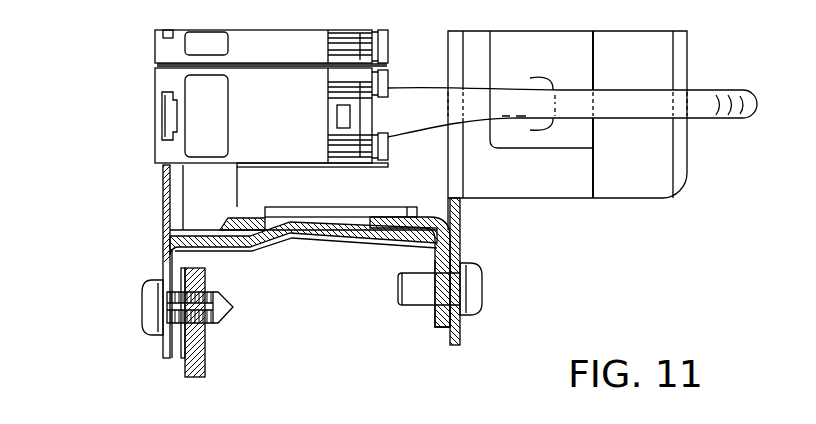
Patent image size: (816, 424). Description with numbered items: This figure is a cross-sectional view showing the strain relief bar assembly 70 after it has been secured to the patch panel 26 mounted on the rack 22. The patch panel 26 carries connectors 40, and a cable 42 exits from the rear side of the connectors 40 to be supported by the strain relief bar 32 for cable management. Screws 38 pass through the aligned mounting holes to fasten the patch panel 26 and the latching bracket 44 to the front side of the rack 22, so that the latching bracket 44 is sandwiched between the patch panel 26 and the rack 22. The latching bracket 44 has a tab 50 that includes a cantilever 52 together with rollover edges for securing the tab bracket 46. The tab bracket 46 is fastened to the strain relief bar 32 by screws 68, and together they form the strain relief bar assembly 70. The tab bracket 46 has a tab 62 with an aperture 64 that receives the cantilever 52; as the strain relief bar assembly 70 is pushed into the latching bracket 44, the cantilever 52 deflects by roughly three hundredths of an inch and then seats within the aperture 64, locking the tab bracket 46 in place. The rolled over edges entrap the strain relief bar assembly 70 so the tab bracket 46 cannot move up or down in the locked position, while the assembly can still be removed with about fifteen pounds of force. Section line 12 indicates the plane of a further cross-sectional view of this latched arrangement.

The section line 12 is at (148, 263).
The rack 22 is at (205, 353).
The patch panel 26 is at (160, 178).
The strain relief bar 32 is at (462, 225).
The screws 38 is at (142, 315).
The connectors 40 is at (155, 83).
The cable 42 is at (702, 97).
The latching bracket 44 is at (183, 330).
The tab bracket 46 is at (437, 318).
The tab 50 is at (417, 248).
The cantilever 52 is at (292, 233).
The tab 62 is at (243, 215).
The aperture 64 is at (348, 222).
The screws 68 is at (483, 292).
The strain relief bar assembly 70 is at (477, 240).